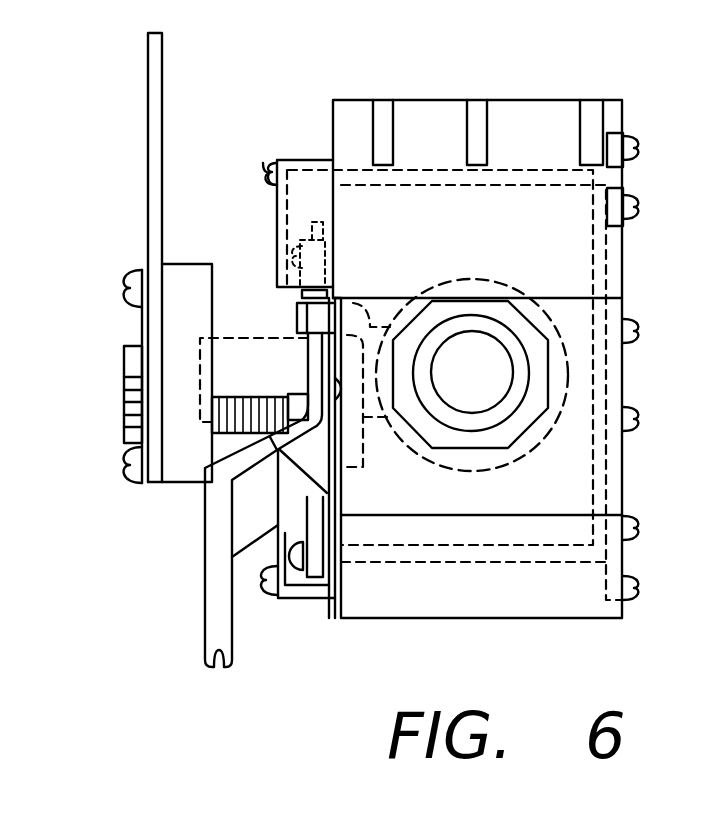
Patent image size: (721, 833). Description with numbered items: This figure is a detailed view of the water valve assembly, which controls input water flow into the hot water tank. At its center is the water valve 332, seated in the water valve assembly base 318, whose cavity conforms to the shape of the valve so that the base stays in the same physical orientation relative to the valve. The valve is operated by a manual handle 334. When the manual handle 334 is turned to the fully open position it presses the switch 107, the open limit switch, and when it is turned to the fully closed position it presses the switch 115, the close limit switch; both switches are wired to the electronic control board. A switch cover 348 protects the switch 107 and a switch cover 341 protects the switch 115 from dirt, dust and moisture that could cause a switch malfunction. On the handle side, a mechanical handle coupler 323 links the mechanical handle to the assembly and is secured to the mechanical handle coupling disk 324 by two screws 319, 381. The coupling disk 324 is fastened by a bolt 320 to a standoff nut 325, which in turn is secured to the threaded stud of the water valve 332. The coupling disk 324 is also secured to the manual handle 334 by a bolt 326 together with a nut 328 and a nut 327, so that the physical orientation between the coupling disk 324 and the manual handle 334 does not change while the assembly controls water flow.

The switch 107 is at (325, 263).
The switch 115 is at (318, 565).
The water valve assembly base 318 is at (538, 110).
The screw 319 is at (148, 483).
The bolt 320 is at (123, 360).
The mechanical handle coupler 323 is at (158, 70).
The mechanical handle coupling disk 324 is at (197, 267).
The standoff nut 325 is at (243, 338).
The bolt 326 is at (245, 397).
The nut 327 is at (123, 420).
The nut 328 is at (290, 394).
The water valve 332 is at (465, 290).
The manual handle 334 is at (205, 665).
The switch cover 341 is at (280, 598).
The switch cover 348 is at (315, 163).
The screw 381 is at (142, 280).